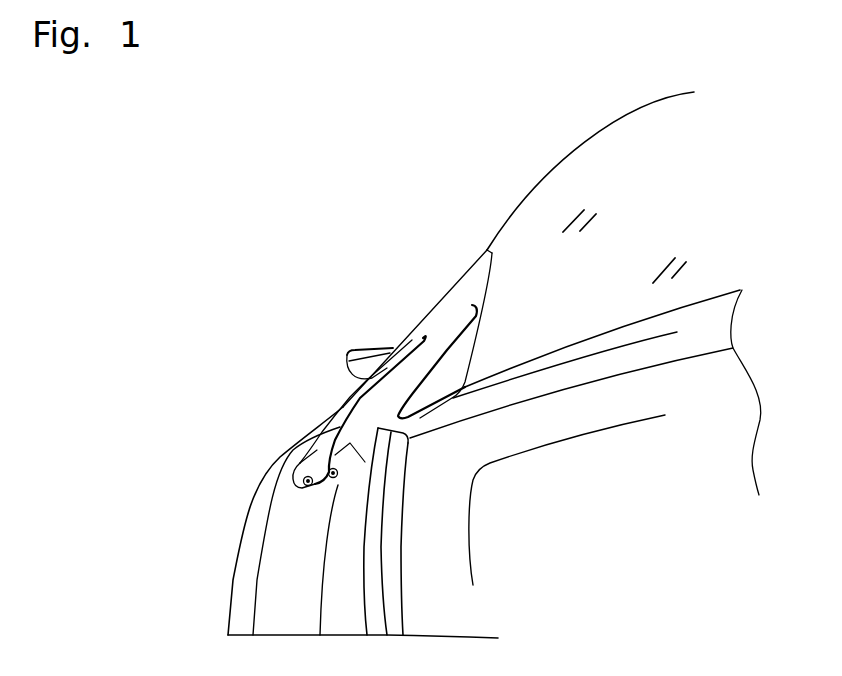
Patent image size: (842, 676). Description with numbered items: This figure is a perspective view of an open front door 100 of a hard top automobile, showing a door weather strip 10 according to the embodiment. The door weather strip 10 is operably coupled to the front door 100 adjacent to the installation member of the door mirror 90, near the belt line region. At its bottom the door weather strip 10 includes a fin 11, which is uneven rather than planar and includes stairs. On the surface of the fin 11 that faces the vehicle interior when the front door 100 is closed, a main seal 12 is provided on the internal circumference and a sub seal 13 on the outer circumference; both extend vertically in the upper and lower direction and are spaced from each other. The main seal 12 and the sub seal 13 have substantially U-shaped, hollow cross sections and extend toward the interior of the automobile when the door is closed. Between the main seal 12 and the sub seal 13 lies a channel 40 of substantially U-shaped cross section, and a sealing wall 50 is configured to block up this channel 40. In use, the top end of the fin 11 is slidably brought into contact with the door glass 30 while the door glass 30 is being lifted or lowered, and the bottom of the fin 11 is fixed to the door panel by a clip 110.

The front door 100 is at (252, 402).
The door weather strip 10 is at (407, 342).
The fin 11 is at (312, 467).
The main seal 12 is at (370, 432).
The sub seal 13 is at (330, 424).
The door glass 30 is at (600, 157).
The channel 40 is at (347, 422).
The sealing wall 50 is at (348, 443).
The door mirror 90 is at (348, 350).
The clip 110 is at (330, 488).